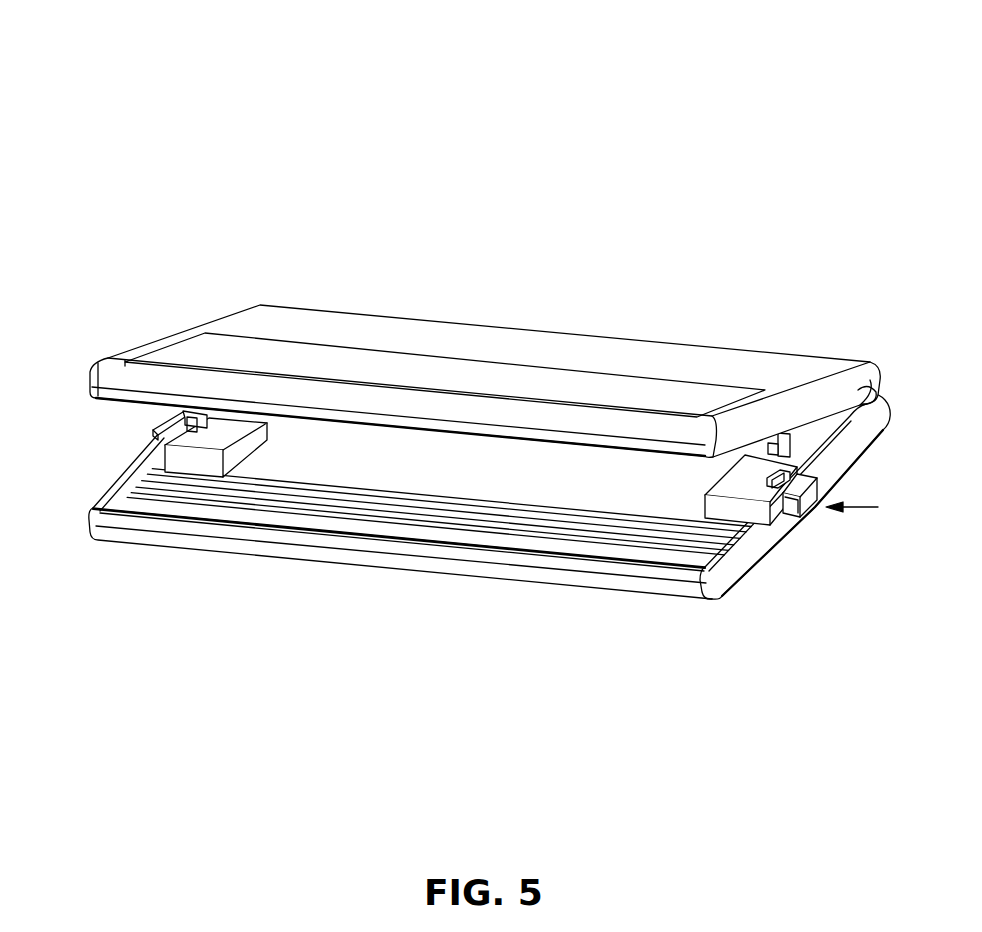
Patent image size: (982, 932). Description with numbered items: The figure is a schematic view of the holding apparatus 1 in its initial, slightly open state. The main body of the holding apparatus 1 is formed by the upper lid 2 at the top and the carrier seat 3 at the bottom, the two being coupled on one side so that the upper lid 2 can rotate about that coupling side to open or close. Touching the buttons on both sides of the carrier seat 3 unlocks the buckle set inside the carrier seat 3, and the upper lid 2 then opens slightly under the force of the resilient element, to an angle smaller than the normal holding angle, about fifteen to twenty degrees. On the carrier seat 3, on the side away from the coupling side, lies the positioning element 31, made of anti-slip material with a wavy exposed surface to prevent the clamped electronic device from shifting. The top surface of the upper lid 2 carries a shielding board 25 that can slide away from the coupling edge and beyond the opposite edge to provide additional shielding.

The holding apparatus 1 is at (494, 245).
The upper lid 2 is at (263, 323).
The shielding board 25 is at (396, 372).
The carrier seat 3 is at (742, 557).
The positioning element 31 is at (445, 527).